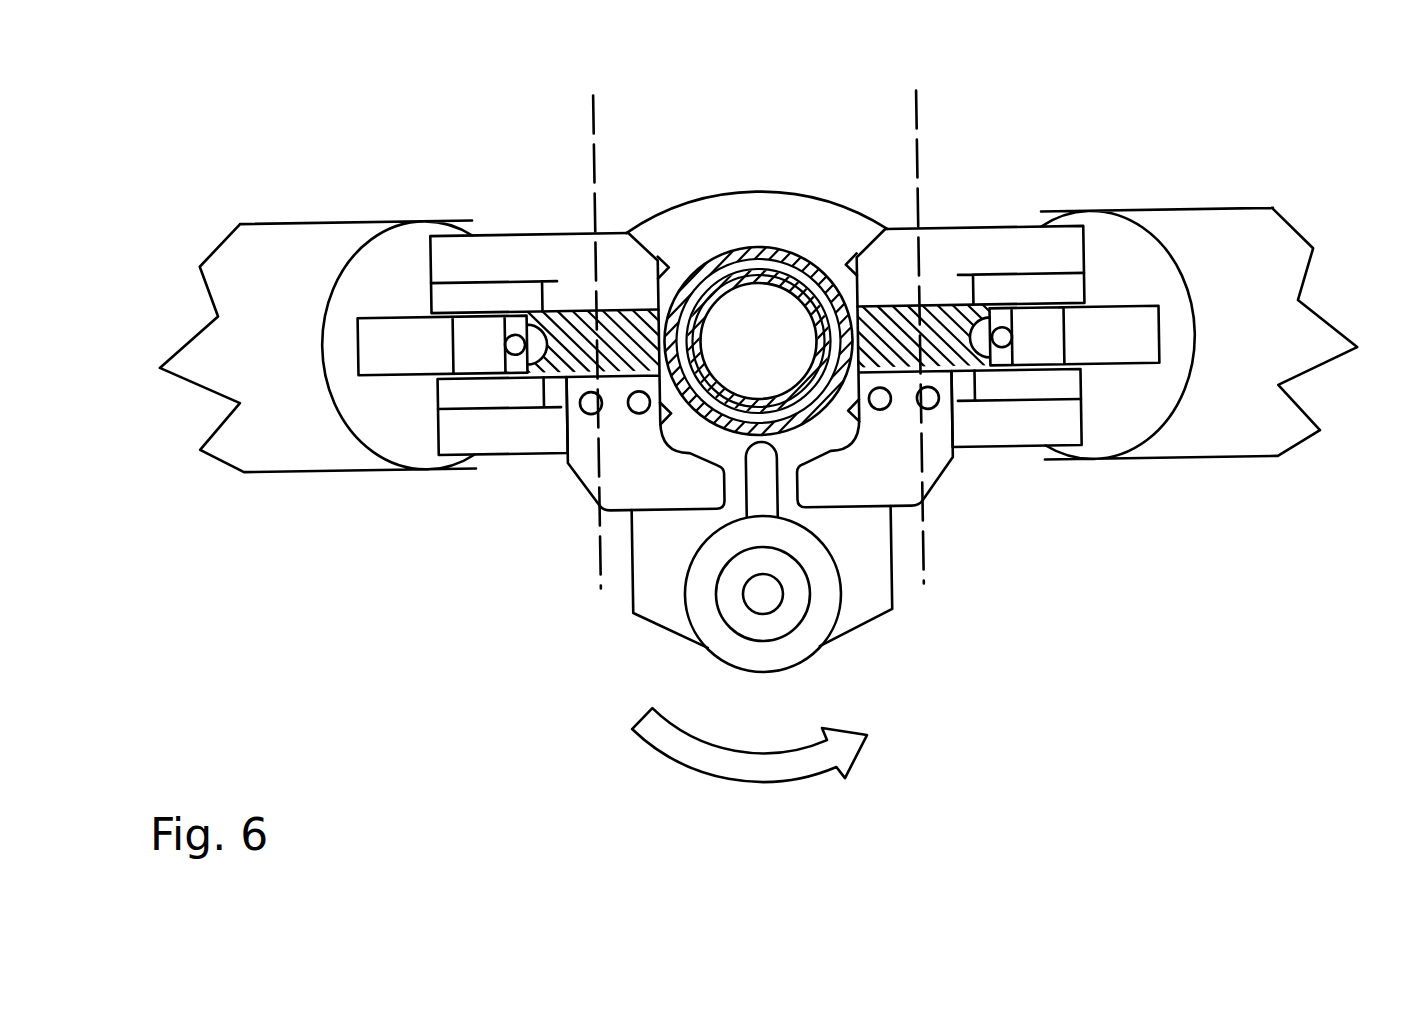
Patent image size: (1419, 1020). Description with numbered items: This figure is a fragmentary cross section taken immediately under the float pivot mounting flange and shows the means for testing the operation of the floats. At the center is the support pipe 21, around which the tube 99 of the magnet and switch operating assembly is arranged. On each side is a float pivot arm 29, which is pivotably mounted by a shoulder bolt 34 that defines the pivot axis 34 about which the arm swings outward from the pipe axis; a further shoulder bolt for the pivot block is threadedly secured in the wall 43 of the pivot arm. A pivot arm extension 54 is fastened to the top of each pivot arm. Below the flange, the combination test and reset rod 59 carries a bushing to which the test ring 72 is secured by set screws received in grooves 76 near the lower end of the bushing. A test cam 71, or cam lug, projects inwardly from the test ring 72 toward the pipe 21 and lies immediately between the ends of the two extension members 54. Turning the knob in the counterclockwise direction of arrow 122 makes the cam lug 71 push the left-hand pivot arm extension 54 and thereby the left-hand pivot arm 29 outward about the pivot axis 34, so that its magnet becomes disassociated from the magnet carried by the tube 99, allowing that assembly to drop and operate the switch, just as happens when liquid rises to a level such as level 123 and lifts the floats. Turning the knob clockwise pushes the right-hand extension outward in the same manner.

The pipe 21 is at (768, 247).
The float pivot arm 29 is at (512, 434).
The shoulder bolt 34 is at (597, 148).
The wall 43 is at (464, 387).
The pivot arm extension 54 is at (583, 457).
The combination test and reset rod 59 is at (771, 587).
The test cam 71 is at (760, 488).
The test ring 72 is at (795, 643).
The grooves 76 is at (794, 608).
The tube 99 is at (831, 279).
The arrow 122 is at (715, 770).
The level 123 is at (758, 435).